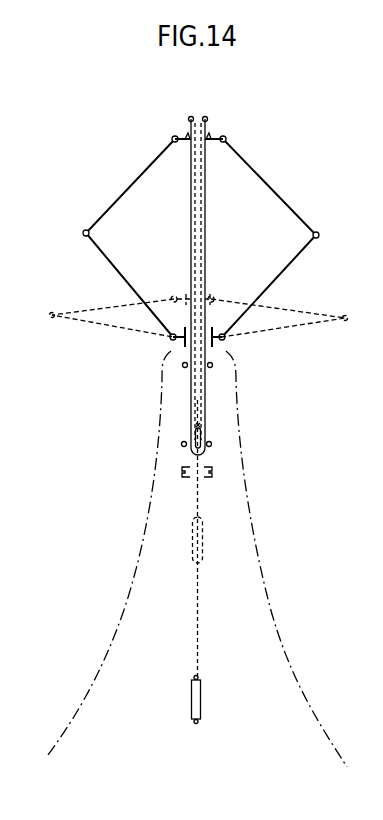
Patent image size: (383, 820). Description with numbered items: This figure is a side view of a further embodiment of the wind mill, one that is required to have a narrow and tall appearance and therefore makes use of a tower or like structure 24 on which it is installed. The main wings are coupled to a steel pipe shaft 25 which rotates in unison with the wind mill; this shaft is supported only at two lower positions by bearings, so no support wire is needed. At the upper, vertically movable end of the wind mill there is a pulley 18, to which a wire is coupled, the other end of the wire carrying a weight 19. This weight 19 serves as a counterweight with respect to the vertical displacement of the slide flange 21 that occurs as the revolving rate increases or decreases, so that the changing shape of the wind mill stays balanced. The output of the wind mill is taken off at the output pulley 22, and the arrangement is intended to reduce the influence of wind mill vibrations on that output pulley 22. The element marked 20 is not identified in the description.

The pulley 18 is at (198, 121).
The weight 19 is at (200, 688).
The central rod 20 is at (205, 198).
The slide flange 21 is at (212, 144).
The output pulley 22 is at (213, 467).
The tower or like structure 24 is at (147, 530).
The steel pipe shaft 25 is at (191, 248).